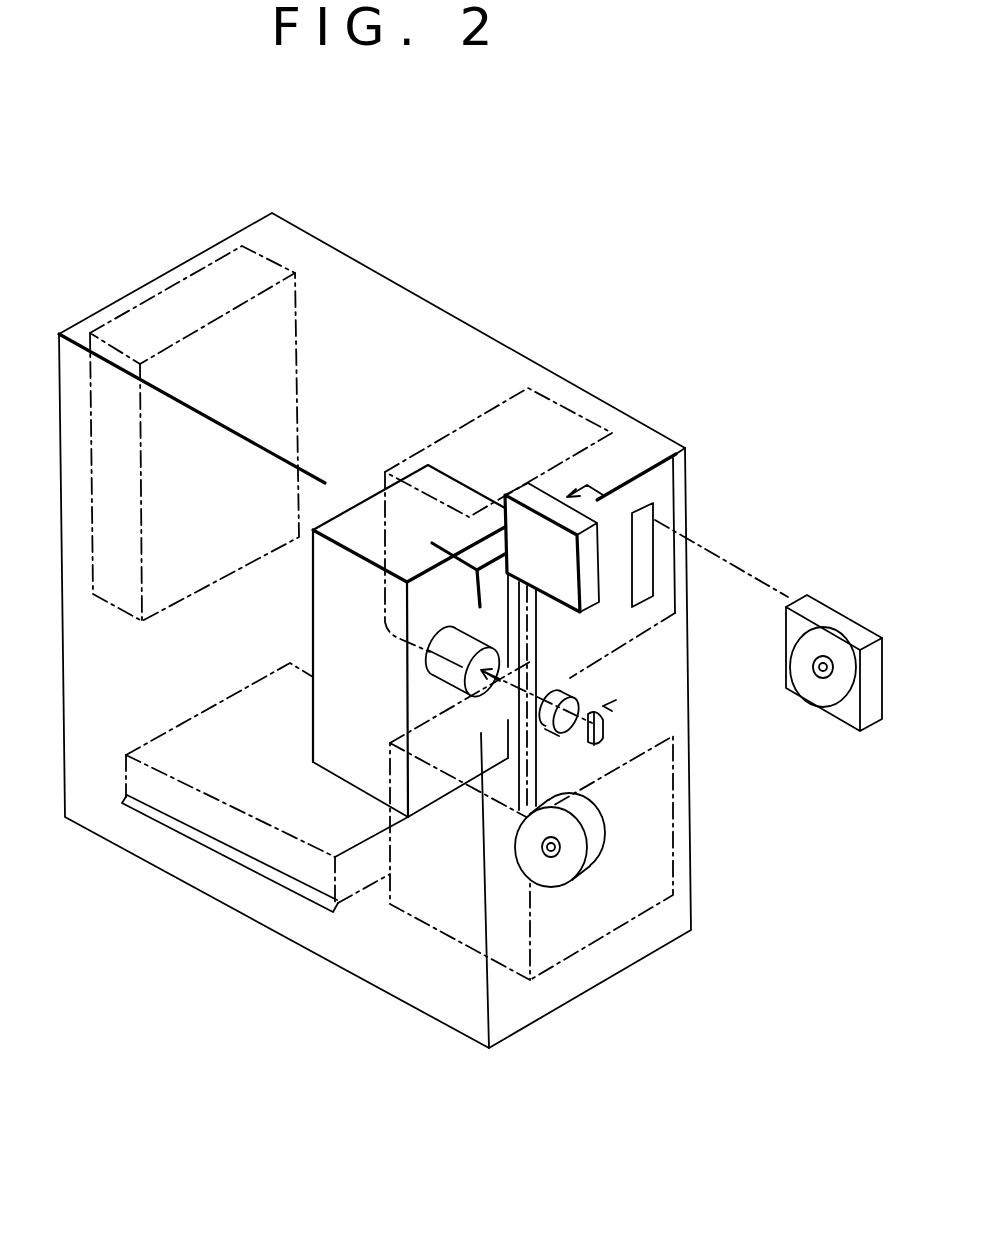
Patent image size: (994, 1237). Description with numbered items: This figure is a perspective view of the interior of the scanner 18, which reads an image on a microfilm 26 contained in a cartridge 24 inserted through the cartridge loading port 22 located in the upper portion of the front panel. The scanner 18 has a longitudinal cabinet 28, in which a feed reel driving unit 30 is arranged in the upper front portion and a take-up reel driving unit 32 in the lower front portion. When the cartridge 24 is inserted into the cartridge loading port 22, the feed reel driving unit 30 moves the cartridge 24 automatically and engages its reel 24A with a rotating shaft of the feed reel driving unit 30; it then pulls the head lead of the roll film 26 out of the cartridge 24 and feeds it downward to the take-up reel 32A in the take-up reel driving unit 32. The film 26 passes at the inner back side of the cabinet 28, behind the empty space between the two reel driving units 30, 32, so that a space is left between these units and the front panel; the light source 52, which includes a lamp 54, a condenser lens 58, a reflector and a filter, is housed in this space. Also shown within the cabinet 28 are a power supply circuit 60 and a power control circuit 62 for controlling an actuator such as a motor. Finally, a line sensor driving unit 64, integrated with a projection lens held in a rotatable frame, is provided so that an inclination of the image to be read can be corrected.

The scanner 18 is at (462, 320).
The cartridge loading port 22 is at (645, 516).
The cartridge 24 is at (850, 622).
The reel 24A is at (828, 705).
The microfilm 26 is at (535, 762).
The cabinet 28 is at (302, 234).
The feed reel driving unit 30 is at (613, 432).
The take-up reel driving unit 32 is at (672, 900).
The take-up reel 32A is at (573, 870).
The light source 52 is at (605, 705).
The lamp 54 is at (604, 726).
The condenser lens 58 is at (587, 692).
The power supply circuit 60 is at (300, 317).
The power control circuit 62 is at (126, 785).
The line sensor driving unit 64 is at (452, 478).